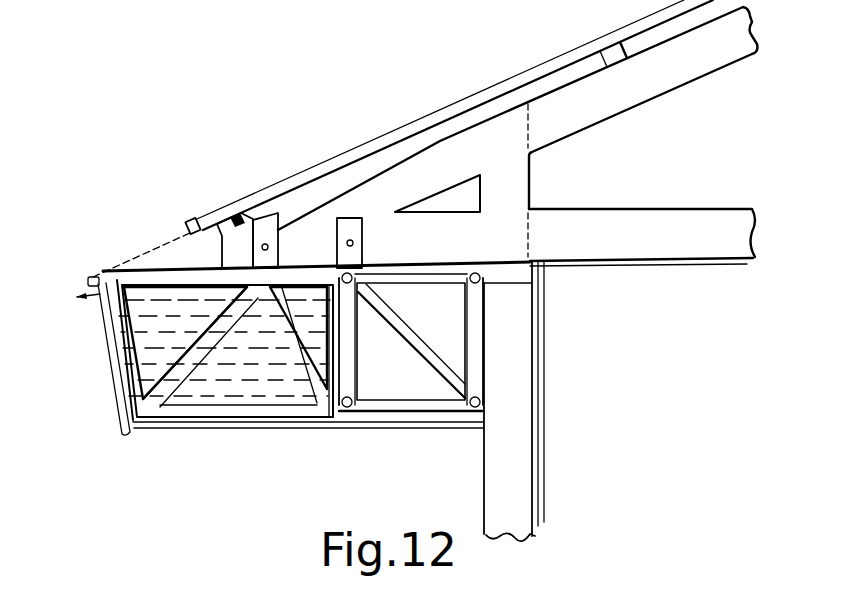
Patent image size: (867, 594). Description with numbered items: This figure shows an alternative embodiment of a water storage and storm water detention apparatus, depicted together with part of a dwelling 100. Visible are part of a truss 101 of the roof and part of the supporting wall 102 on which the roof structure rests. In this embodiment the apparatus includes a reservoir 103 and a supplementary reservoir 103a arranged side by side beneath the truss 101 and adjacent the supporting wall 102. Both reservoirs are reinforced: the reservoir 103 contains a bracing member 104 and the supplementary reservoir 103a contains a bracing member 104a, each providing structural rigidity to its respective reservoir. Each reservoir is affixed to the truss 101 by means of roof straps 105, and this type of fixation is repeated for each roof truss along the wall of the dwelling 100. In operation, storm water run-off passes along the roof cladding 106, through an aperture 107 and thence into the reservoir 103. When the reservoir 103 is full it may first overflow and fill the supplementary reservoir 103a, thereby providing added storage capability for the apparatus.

The dwelling 100 is at (328, 80).
The truss 101 is at (567, 97).
The supporting wall 102 is at (527, 398).
The reservoir 103 is at (130, 358).
The supplementary reservoir 103a is at (387, 383).
The bracing member 104 is at (185, 375).
The bracing member 104a is at (443, 383).
The roof strap 105 is at (350, 218).
The roof cladding 106 is at (196, 222).
The aperture 107 is at (148, 252).